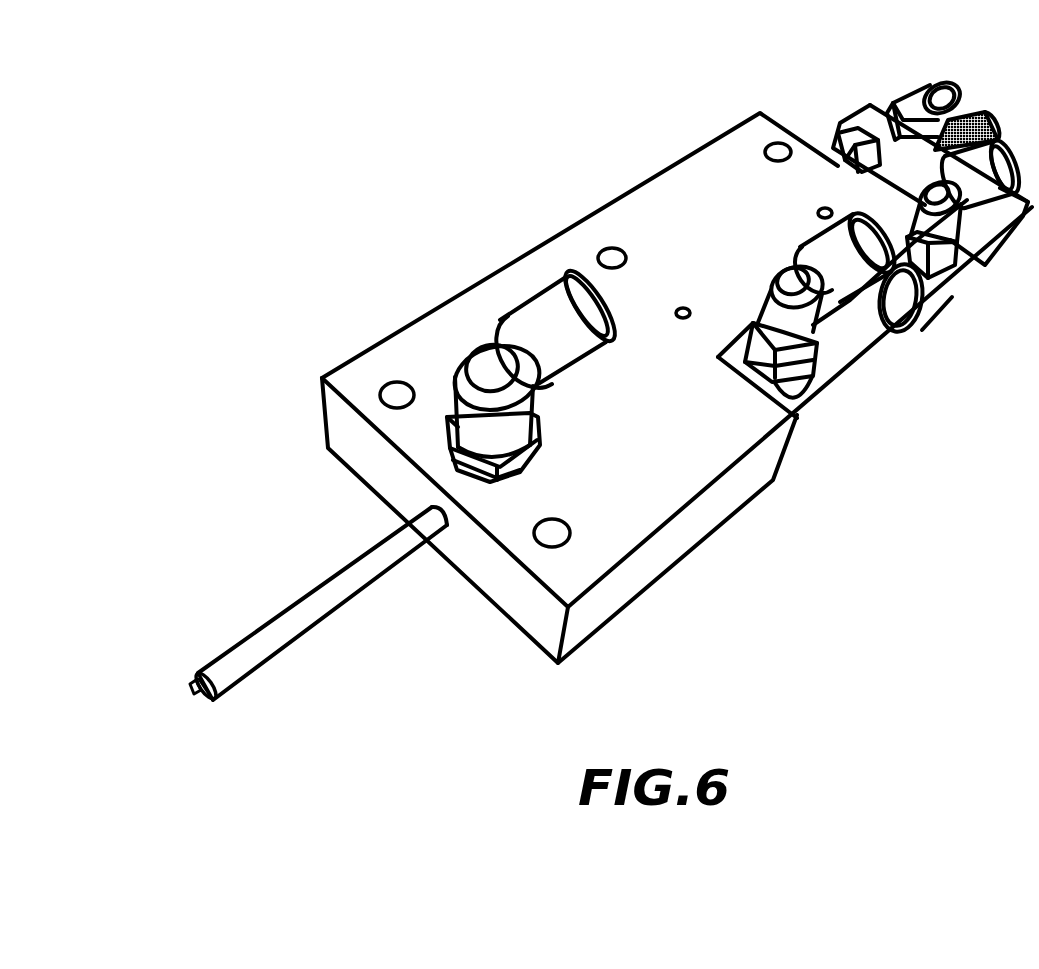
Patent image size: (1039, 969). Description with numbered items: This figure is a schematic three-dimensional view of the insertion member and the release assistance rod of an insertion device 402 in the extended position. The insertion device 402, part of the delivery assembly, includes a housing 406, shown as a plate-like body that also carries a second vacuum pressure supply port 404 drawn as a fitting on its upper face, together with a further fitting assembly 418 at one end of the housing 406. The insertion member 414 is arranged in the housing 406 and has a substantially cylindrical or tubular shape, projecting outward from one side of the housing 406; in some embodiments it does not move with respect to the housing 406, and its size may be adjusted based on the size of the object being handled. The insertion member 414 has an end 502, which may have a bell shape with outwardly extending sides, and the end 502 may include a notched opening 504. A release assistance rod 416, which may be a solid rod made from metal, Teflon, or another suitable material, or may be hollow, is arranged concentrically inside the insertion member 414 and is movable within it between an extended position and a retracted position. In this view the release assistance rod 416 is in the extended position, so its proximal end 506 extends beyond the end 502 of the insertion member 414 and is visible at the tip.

The insertion device 402 is at (300, 146).
The second vacuum pressure supply port 404 is at (539, 305).
The housing 406 is at (687, 207).
The insertion member 414 is at (320, 600).
The release assistance rod 416 is at (192, 693).
The manifold block 418 is at (858, 347).
The end 502 is at (205, 667).
The notched opening 504 is at (218, 676).
The proximal end 506 is at (192, 695).